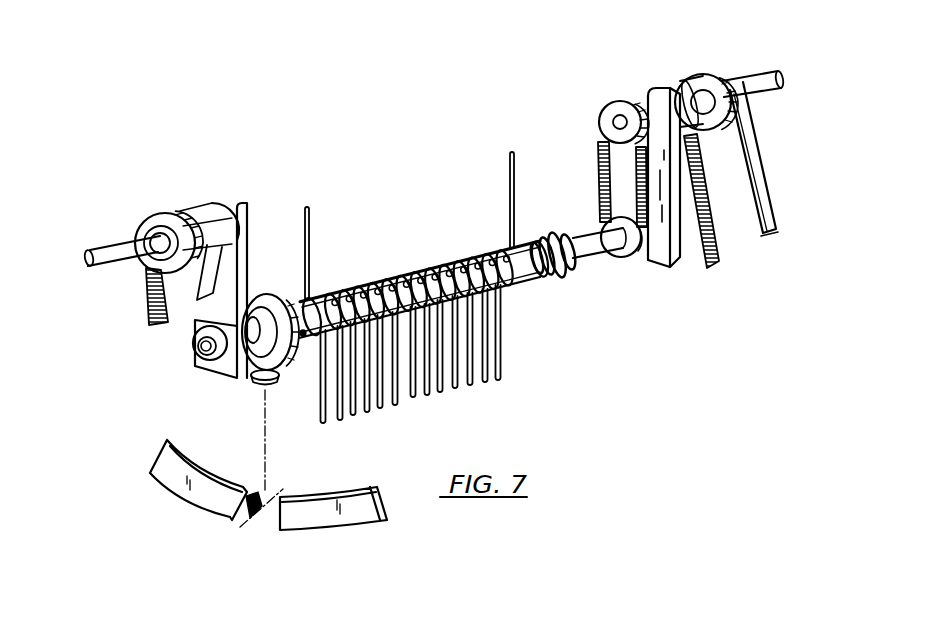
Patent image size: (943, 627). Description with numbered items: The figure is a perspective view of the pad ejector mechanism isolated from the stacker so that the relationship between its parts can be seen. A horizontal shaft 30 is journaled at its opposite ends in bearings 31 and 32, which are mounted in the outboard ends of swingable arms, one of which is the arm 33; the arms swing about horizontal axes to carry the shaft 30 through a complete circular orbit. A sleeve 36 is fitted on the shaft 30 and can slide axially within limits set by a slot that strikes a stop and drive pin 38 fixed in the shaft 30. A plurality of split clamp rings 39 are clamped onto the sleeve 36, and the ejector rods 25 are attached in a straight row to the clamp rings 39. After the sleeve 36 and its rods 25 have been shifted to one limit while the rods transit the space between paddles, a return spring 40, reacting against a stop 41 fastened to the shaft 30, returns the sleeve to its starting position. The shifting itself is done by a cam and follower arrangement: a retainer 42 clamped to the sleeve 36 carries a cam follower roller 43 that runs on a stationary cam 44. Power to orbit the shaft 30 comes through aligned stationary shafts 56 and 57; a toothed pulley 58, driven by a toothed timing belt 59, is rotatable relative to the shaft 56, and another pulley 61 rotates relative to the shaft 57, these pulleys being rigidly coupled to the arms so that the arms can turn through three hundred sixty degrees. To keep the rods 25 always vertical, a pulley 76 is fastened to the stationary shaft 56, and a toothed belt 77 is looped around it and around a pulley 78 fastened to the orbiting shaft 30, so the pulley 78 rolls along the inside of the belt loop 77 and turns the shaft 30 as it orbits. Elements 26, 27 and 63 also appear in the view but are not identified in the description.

The ejector rods 25 is at (440, 397).
The guide post 26 is at (313, 210).
The guide post 27 is at (512, 155).
The shaft 30 is at (593, 250).
The bearing 31 is at (208, 361).
The bearing 32 is at (670, 267).
The swingable arm 33 is at (205, 372).
The sleeve 36 is at (254, 346).
The stop and drive pin 38 is at (301, 360).
The split clamp ring 39 is at (464, 258).
The return spring 40 is at (538, 278).
The stop 41 is at (564, 276).
The retainer 42 is at (260, 294).
The cam follower roller 43 is at (263, 383).
The stationary cam 44 is at (275, 523).
The stationary shaft 56 is at (759, 72).
The stationary shaft 57 is at (110, 247).
The toothed pulley 58 is at (693, 74).
The toothed belt 59 is at (752, 167).
The pulley 61 is at (157, 214).
The toothed belt 63 is at (141, 303).
The pulley 76 is at (610, 105).
The toothed belt 77 is at (600, 147).
The pulley 78 is at (625, 258).